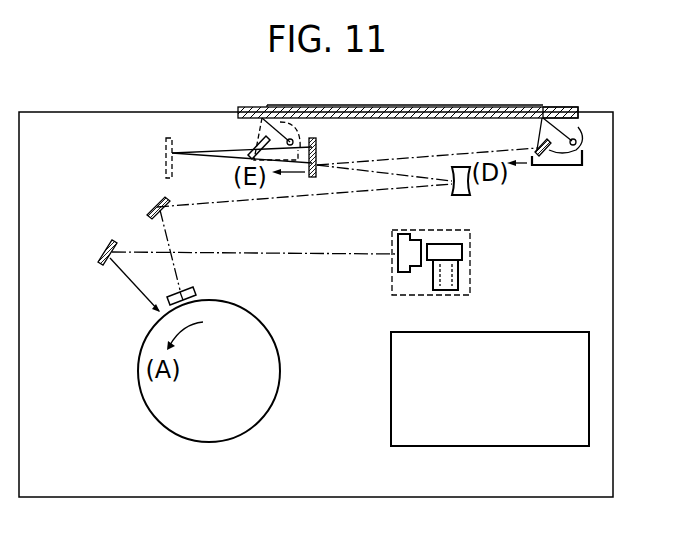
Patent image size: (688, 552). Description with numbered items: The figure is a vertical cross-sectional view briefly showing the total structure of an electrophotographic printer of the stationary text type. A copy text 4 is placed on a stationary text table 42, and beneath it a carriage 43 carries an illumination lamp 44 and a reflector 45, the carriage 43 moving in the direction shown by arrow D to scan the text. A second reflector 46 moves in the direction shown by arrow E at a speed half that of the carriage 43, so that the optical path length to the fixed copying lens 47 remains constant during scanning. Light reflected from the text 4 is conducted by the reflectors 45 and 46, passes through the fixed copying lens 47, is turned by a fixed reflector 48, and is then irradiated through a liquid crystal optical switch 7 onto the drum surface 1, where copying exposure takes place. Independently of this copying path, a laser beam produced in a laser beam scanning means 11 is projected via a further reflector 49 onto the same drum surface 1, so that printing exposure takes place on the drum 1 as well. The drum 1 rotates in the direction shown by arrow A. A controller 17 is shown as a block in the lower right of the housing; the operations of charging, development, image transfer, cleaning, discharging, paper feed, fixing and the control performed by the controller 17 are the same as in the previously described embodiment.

The drum surface 1 is at (281, 372).
The copy text 4 is at (424, 106).
The liquid crystal optical switch 7 is at (198, 290).
The laser beam scanning means 11 is at (470, 279).
The controller 17 is at (392, 422).
The text table 42 is at (568, 106).
The carriage 43 is at (584, 161).
The illumination lamp 44 is at (580, 140).
The reflector 45 is at (548, 165).
The reflector 46 is at (313, 178).
The copying lens 47 is at (471, 190).
The fixed reflector 48 is at (154, 206).
The reflector 49 is at (102, 247).